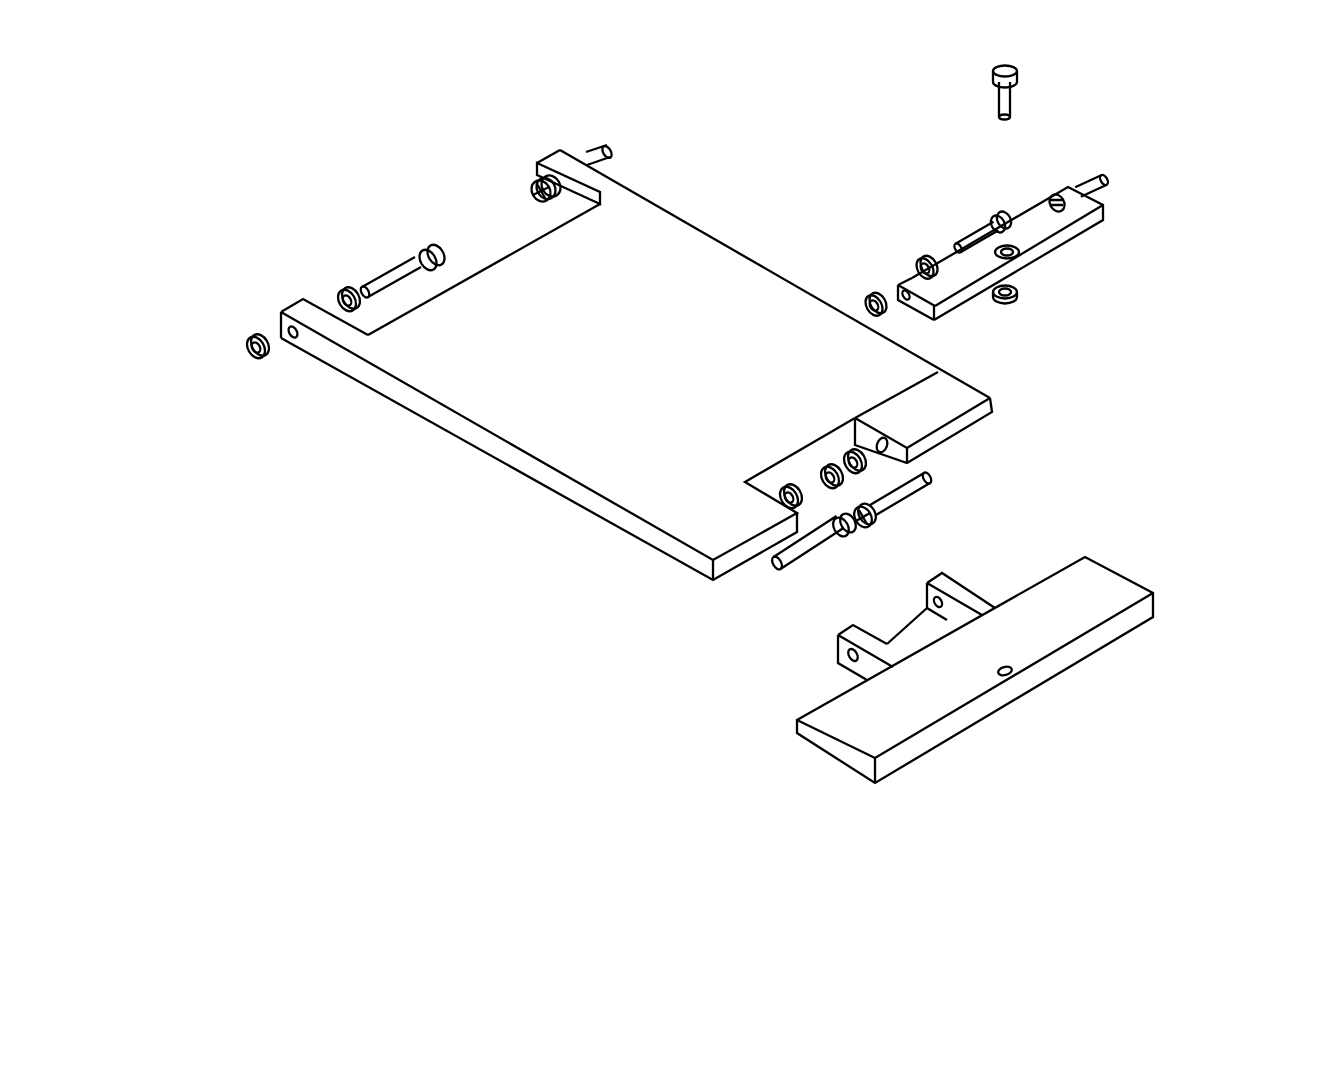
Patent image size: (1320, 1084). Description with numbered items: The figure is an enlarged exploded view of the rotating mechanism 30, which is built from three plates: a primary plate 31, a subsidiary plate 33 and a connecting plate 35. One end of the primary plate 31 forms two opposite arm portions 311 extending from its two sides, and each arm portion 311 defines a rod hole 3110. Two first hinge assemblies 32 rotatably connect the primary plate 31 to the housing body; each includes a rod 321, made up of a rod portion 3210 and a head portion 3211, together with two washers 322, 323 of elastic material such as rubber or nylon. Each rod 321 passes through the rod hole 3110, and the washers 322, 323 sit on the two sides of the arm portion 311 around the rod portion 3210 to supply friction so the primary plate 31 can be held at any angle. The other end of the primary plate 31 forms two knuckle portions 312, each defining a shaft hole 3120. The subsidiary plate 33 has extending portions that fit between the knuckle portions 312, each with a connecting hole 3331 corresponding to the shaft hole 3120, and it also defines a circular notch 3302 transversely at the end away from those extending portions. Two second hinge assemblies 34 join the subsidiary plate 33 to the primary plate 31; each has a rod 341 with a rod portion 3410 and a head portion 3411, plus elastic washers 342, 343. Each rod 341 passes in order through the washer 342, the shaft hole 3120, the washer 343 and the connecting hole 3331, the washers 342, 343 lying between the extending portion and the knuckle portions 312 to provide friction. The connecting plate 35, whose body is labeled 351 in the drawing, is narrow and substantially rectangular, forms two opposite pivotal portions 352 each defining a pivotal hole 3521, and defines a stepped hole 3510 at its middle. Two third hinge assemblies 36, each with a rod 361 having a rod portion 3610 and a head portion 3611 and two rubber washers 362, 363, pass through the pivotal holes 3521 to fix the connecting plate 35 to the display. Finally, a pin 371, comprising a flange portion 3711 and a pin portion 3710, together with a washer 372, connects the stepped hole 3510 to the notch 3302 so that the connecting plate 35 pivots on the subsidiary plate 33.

The rotating mechanism 30 is at (283, 98).
The primary plate 31 is at (648, 169).
The arm portion 311 is at (330, 327).
The rod hole 3110 is at (293, 340).
The knuckle portion 312 is at (933, 417).
The shaft hole 3120 is at (884, 442).
The first hinge assembly 32 is at (175, 182).
The rod 321 is at (246, 173).
The rod portion 3210 is at (397, 276).
The head portion 3211 is at (430, 248).
The washer 322 is at (340, 296).
The washer 323 is at (256, 335).
The subsidiary plate 33 is at (1170, 604).
The circular notch 3302 is at (1013, 674).
The connecting hole 3331 is at (857, 660).
The second hinge assembly 34 is at (606, 578).
The rod 341 is at (675, 638).
The rod portion 3410 is at (805, 552).
The head portion 3411 is at (843, 538).
The washer 342 is at (857, 514).
The washer 343 is at (790, 503).
The connecting plate 35 is at (1112, 208).
The connecting bar 351 is at (1065, 222).
The stepped hole 3510 is at (1017, 252).
The pivotal portion 352 is at (942, 305).
The pivotal hole 3521 is at (908, 300).
The third hinge assembly 36 is at (875, 152).
The rod 361 is at (938, 160).
The rod portion 3610 is at (975, 240).
The head portion 3611 is at (998, 218).
The washer 362 is at (925, 262).
The washer 363 is at (874, 298).
The pin 371 is at (911, 46).
The pin portion 3710 is at (1005, 107).
The flange portion 3711 is at (1002, 68).
The washer 372 is at (1018, 287).